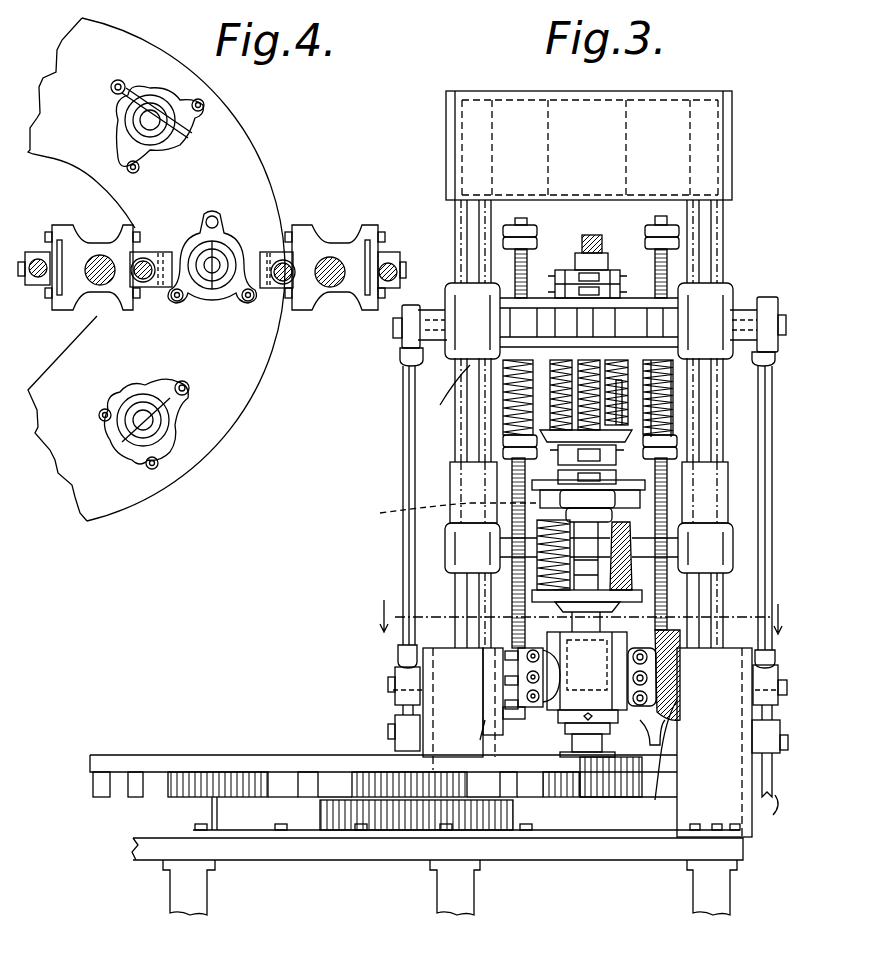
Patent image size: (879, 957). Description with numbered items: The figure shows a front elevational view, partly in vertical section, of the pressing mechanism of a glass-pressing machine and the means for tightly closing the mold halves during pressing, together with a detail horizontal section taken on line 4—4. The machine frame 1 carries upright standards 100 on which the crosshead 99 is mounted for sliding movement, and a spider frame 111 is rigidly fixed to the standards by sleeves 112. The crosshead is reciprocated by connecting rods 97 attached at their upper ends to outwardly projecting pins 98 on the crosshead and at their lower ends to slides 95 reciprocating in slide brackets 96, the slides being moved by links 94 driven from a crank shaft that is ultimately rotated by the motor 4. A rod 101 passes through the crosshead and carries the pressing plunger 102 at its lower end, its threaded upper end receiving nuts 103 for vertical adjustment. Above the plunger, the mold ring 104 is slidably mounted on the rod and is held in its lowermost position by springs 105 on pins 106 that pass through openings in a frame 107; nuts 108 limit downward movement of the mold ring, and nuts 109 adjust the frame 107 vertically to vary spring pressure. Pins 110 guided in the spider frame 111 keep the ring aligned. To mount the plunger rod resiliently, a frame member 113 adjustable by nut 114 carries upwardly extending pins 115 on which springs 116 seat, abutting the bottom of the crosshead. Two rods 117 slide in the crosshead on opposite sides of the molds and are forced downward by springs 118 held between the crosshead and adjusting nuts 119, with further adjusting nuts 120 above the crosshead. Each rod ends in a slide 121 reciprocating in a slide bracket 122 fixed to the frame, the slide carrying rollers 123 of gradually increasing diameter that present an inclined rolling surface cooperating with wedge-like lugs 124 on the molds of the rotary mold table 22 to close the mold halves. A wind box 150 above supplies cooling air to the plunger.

In FIG. 3, the frame 1 is at (180, 882).
In FIG. 3, the motor 4 is at (571, 614).
In FIG. 3, the rotary mold table 22 is at (182, 755).
In FIG. 4, the rotary mold table 22 is at (232, 400).
In FIG. 3, the links 94 is at (395, 740).
In FIG. 3, the slides 95 is at (393, 692).
In FIG. 3, the slide brackets 96 is at (448, 708).
In FIG. 3, the connecting rods 97 is at (403, 440).
In FIG. 3, the outwardly projecting pins 98 is at (410, 325).
In FIG. 3, the crosshead 99 is at (543, 298).
In FIG. 3, the standards 100 is at (410, 408).
In FIG. 4, the standards 100 is at (97, 258).
In FIG. 3, the rod 101 is at (592, 250).
In FIG. 3, the pressing plunger 102 is at (600, 625).
In FIG. 3, the nuts 103 is at (618, 292).
In FIG. 3, the mold ring 104 is at (532, 600).
In FIG. 3, the springs 105 is at (537, 575).
In FIG. 3, the pins 106 is at (442, 513).
In FIG. 3, the frame 107 is at (645, 500).
In FIG. 3, the nuts 108 is at (470, 480).
In FIG. 3, the nuts 109 is at (616, 476).
In FIG. 3, the pins 110 is at (630, 572).
In FIG. 3, the spider frame 111 is at (470, 552).
In FIG. 3, the sleeves 112 is at (445, 535).
In FIG. 3, the frame member 113 is at (550, 410).
In FIG. 3, the nut 114 is at (632, 436).
In FIG. 3, the pins 115 is at (655, 400).
In FIG. 3, the springs 116 is at (622, 388).
In FIG. 3, the rods 117 is at (515, 262).
In FIG. 4, the rods 117 is at (143, 262).
In FIG. 3, the springs 118 is at (503, 390).
In FIG. 3, the adjusting nuts 119 is at (503, 450).
In FIG. 3, the adjusting nuts 120 is at (503, 235).
In FIG. 3, the slide 121 is at (505, 715).
In FIG. 4, the slide 121 is at (172, 300).
In FIG. 3, the slide bracket 122 is at (655, 805).
In FIG. 4, the slide bracket 122 is at (105, 310).
In FIG. 3, the rollers 123 is at (530, 650).
In FIG. 4, the rollers 123 is at (172, 245).
In FIG. 3, the lugs 124 is at (527, 672).
In FIG. 4, the lugs 124 is at (120, 395).
In FIG. 3, the wind box 150 is at (680, 150).